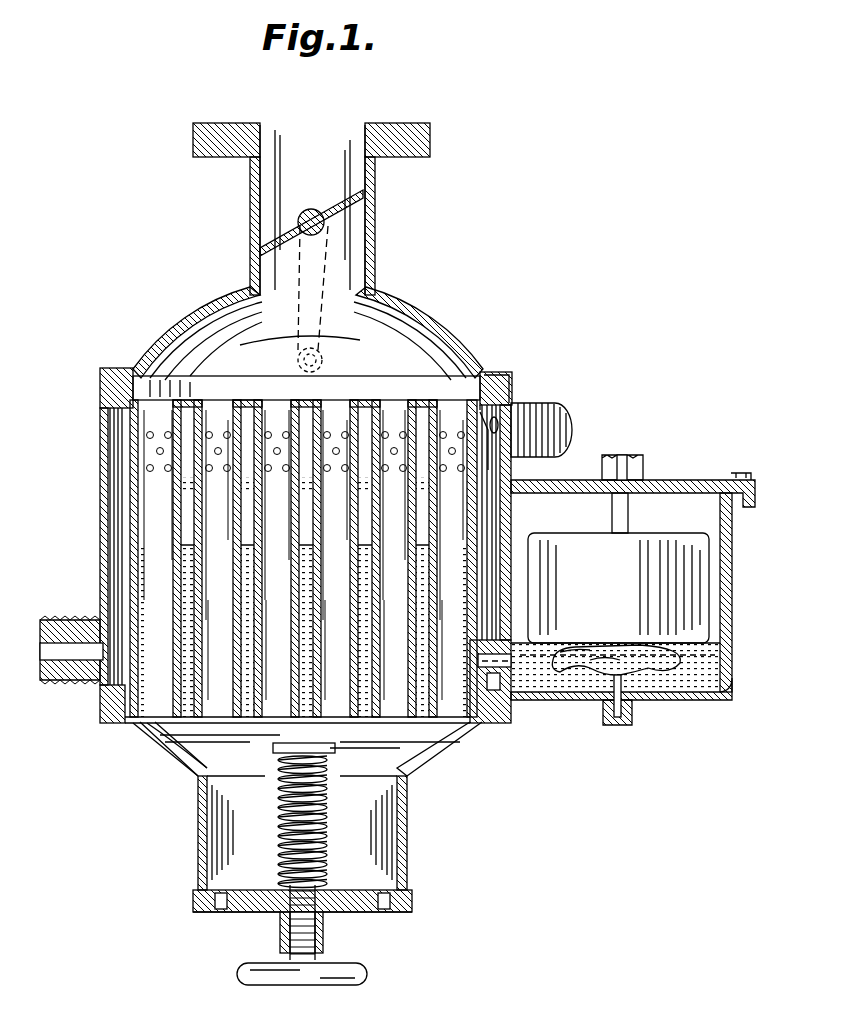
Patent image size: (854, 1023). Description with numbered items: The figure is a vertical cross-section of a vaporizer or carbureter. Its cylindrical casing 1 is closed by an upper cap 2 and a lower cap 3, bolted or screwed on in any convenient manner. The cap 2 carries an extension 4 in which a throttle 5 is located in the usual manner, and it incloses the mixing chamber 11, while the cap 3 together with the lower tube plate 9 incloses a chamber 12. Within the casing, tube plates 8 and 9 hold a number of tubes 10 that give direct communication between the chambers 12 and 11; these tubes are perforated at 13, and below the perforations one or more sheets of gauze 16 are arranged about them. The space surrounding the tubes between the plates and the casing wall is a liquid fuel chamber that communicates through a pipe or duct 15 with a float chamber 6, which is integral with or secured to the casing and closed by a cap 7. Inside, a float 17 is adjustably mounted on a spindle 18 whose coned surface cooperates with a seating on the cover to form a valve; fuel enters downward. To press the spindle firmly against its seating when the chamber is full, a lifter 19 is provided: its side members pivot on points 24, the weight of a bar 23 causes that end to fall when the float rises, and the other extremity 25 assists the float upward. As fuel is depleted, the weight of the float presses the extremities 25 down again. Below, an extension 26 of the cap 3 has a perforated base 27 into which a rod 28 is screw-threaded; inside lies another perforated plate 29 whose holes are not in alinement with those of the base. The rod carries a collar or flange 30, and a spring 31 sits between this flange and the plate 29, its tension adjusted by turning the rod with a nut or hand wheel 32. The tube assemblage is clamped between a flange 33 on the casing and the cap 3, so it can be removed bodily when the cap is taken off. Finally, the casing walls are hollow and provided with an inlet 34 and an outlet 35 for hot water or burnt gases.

The casing 1 is at (100, 440).
The cap 2 is at (197, 322).
The cap 3 is at (172, 760).
The extension 4 is at (376, 218).
The throttle 5 is at (348, 192).
The float chamber 6 is at (732, 660).
The cap 7 is at (700, 482).
The tube plate 8 is at (420, 400).
The tube plate 9 is at (440, 735).
The tubes 10 is at (400, 398).
The mixing chamber 11 is at (258, 333).
The chamber 12 is at (225, 745).
The perforations 13 is at (511, 382).
The pipe or duct 15 is at (497, 720).
The sheets of gauze 16 is at (185, 478).
The float 17 is at (640, 560).
The spindle 18 is at (625, 472).
The lifter 19 is at (648, 668).
The bar 23 is at (705, 712).
The points 24 is at (600, 680).
The extremity of the lifter 25 is at (568, 660).
The extension 26 is at (198, 850).
The perforated base 27 is at (240, 910).
The rod 28 is at (320, 935).
The plate 29 is at (400, 893).
The collar or flange 30 is at (335, 748).
The spring 31 is at (330, 827).
The nut or hand wheel 32 is at (350, 978).
The flange 33 is at (462, 437).
The inlet 34 is at (68, 652).
The outlet 35 is at (560, 425).